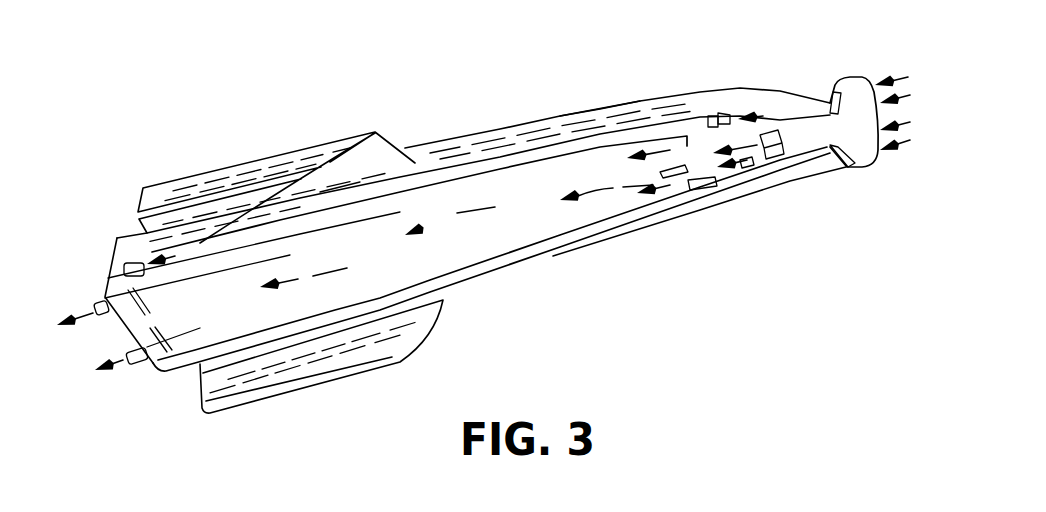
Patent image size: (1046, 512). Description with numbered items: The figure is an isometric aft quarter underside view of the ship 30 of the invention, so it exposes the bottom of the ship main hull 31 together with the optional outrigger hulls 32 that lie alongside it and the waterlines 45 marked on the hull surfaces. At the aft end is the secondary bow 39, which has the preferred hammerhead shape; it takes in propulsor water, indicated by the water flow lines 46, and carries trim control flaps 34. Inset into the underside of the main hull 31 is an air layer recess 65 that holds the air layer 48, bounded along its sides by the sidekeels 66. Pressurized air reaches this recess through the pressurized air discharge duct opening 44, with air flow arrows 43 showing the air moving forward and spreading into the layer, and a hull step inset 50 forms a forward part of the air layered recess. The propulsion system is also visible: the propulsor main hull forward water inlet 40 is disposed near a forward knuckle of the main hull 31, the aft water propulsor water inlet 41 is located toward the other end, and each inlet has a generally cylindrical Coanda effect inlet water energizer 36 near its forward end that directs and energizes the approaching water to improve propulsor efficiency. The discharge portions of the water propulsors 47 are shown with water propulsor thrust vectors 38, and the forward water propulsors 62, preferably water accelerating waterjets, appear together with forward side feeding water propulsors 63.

The ship 30 is at (517, 122).
The ship main hull 31 is at (610, 105).
The outrigger hulls 32 is at (323, 140).
The trim control flaps 34 is at (828, 90).
The Coanda effect inlet water energizer 36 is at (144, 268).
The water propulsor thrust vectors 38 is at (752, 167).
The secondary bow 39 is at (863, 161).
The propulsor main hull forward water inlet 40 is at (712, 117).
The aft water propulsor water inlet 41 is at (124, 271).
The air flow arrows 43 is at (423, 229).
The pressurized air discharge duct opening 44 is at (660, 172).
The waterlines 45 is at (230, 178).
The water flow lines 46 is at (890, 80).
The water propulsors 47 is at (100, 318).
The air layer 48 is at (412, 273).
The hull step inset 50 is at (778, 140).
The forward water propulsors 62 is at (769, 133).
The forward side feeding water propulsors 63 is at (681, 148).
The air layer recess 65 is at (372, 247).
The sidekeels 66 is at (566, 157).